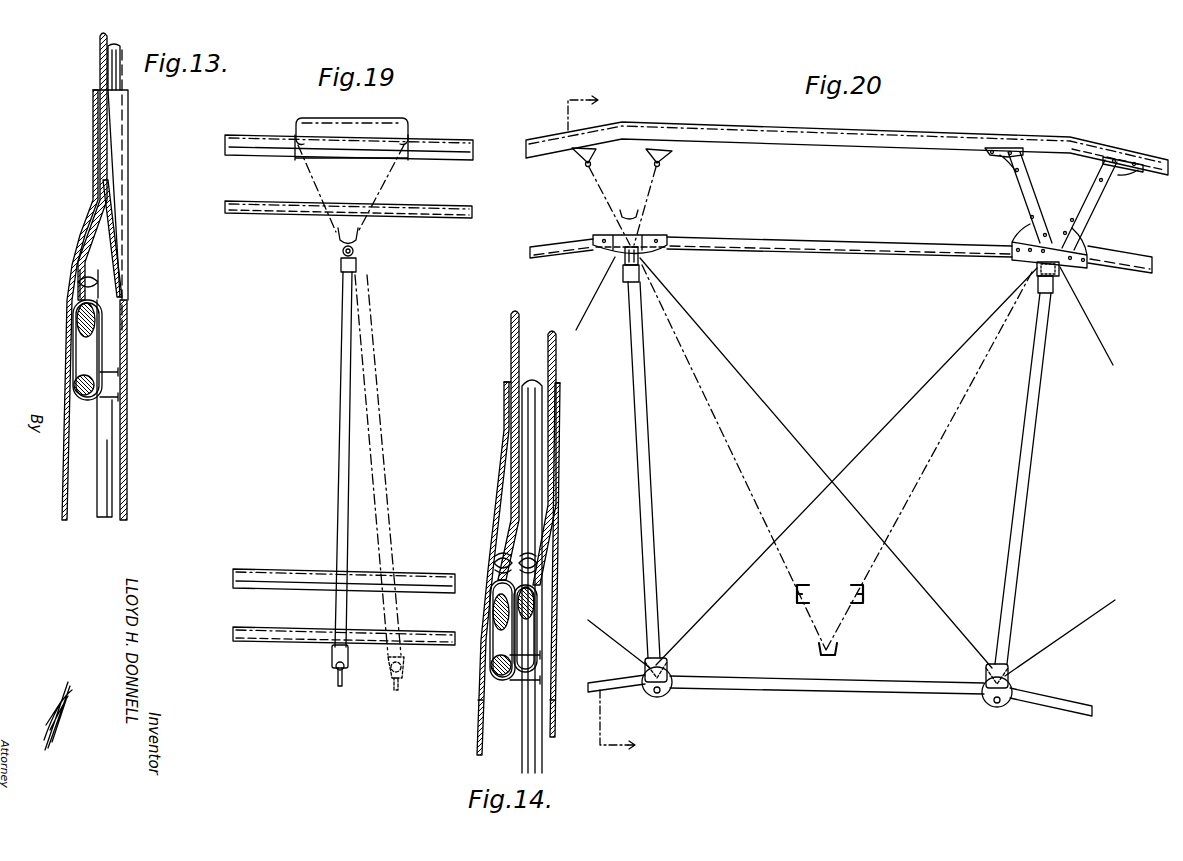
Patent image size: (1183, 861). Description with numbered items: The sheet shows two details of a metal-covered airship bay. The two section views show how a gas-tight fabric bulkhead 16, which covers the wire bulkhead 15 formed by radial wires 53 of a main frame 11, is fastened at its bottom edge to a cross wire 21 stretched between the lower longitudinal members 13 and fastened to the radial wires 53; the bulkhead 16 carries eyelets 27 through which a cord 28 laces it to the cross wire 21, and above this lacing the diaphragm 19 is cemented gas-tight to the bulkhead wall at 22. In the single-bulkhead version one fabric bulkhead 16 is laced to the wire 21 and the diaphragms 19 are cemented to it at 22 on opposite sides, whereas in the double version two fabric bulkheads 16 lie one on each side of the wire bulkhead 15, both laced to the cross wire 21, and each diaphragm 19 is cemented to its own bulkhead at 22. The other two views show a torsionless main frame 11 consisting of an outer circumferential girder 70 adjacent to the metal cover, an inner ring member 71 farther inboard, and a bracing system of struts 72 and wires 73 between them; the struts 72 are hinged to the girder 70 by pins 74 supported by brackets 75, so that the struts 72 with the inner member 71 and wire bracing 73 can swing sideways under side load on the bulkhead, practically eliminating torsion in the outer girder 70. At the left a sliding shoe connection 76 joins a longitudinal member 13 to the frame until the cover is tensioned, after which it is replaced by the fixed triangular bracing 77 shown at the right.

In FIG. 19, the main frame 11 is at (330, 225).
In FIG. 20, the main frame 11 is at (893, 256).
In FIG. 19, the longitudinal member 13 is at (460, 226).
In FIG. 20, the longitudinal member 13 is at (944, 472).
In FIG. 13, the wire bulkhead 15 is at (160, 440).
In FIG. 13, the gas-tight bulkhead 16 is at (99, 60).
In FIG. 14, the gas-tight bulkhead 16 is at (510, 347).
In FIG. 13, the diaphragm 19 is at (64, 479).
In FIG. 14, the diaphragm 19 is at (480, 728).
In FIG. 20, the diaphragm 19 is at (614, 423).
In FIG. 13, the wire 21 is at (78, 388).
In FIG. 14, the wire 21 is at (490, 675).
In FIG. 13, the cemented joint 22 is at (99, 133).
In FIG. 14, the cemented joint 22 is at (503, 418).
In FIG. 13, the eyelets 27 is at (78, 295).
In FIG. 14, the eyelets 27 is at (492, 578).
In FIG. 13, the cord 28 is at (80, 358).
In FIG. 14, the cord 28 is at (493, 628).
In FIG. 13, the radial wires 53 is at (108, 447).
In FIG. 14, the radial wires 53 is at (529, 713).
In FIG. 19, the outer circumferential girder 70 is at (410, 125).
In FIG. 20, the outer circumferential girder 70 is at (914, 132).
In FIG. 19, the inner ring member 71 is at (334, 668).
In FIG. 20, the inner ring member 71 is at (812, 690).
In FIG. 19, the struts 72 is at (339, 480).
In FIG. 20, the struts 72 is at (648, 507).
In FIG. 20, the wires 73 is at (832, 445).
In FIG. 19, the pins 74 is at (356, 250).
In FIG. 20, the pins 74 is at (665, 258).
In FIG. 20, the brackets 75 is at (668, 240).
In FIG. 19, the sliding shoe connection 76 is at (398, 158).
In FIG. 20, the sliding shoe connection 76 is at (668, 162).
In FIG. 20, the fixed triangular bracing 77 is at (1090, 205).